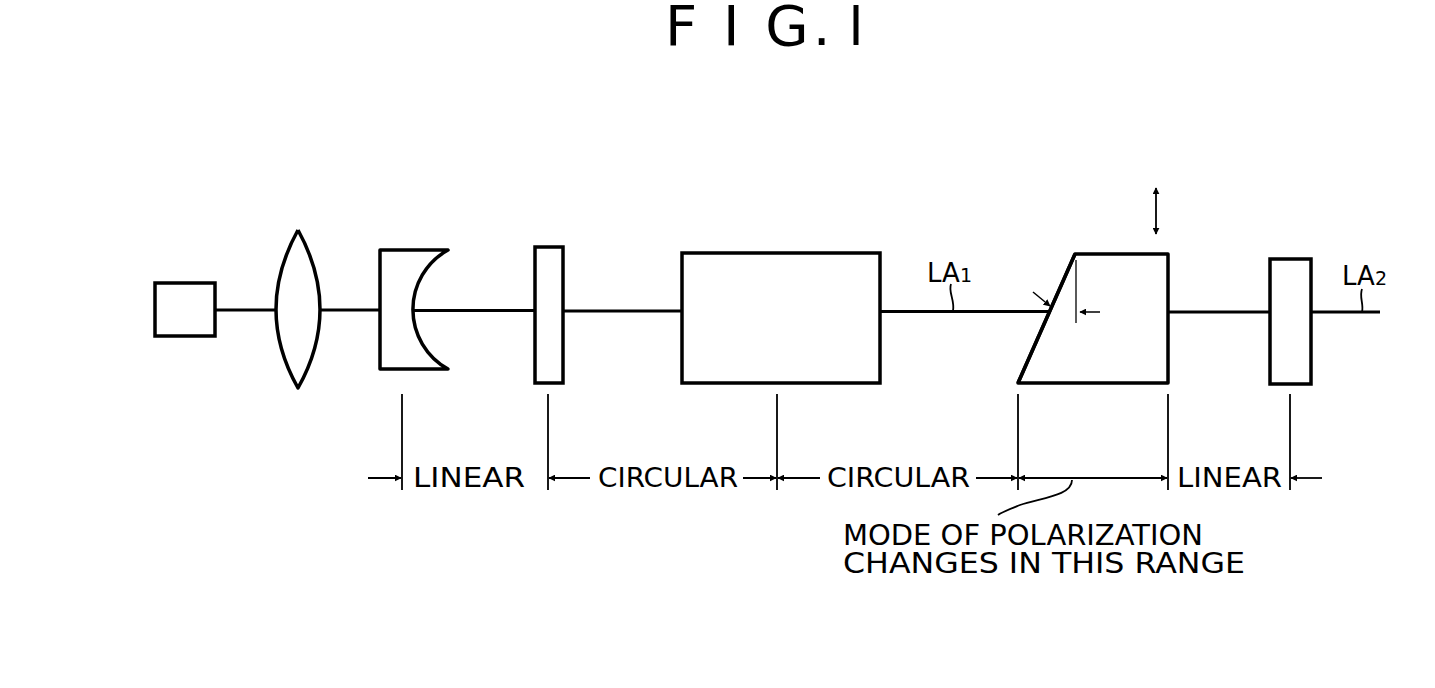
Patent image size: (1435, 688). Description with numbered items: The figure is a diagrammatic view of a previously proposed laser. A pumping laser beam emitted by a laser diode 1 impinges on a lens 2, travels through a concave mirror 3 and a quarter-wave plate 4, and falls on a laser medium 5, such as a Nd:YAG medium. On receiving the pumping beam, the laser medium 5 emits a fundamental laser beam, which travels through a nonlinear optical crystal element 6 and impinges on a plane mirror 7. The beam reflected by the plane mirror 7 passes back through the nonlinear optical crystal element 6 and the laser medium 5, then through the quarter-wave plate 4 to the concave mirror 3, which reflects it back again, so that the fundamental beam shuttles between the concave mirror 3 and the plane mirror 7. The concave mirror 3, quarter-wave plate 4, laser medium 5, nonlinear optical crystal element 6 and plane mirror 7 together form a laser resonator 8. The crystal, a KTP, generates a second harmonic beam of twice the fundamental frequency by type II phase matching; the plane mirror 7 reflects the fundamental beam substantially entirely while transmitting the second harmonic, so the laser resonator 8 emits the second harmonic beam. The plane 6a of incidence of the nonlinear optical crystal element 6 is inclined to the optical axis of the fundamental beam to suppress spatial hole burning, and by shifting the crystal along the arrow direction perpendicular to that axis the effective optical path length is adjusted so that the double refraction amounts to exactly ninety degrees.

The laser diode 1 is at (190, 283).
The lens 2 is at (297, 232).
The concave mirror 3 is at (414, 250).
The quarter-wave plate 4 is at (547, 247).
The laser medium 5 is at (766, 253).
The nonlinear optical crystal element 6 is at (1100, 254).
The plane of incidence 6a is at (1027, 364).
The plane mirror 7 is at (1298, 259).
The laser resonator 8 is at (866, 207).